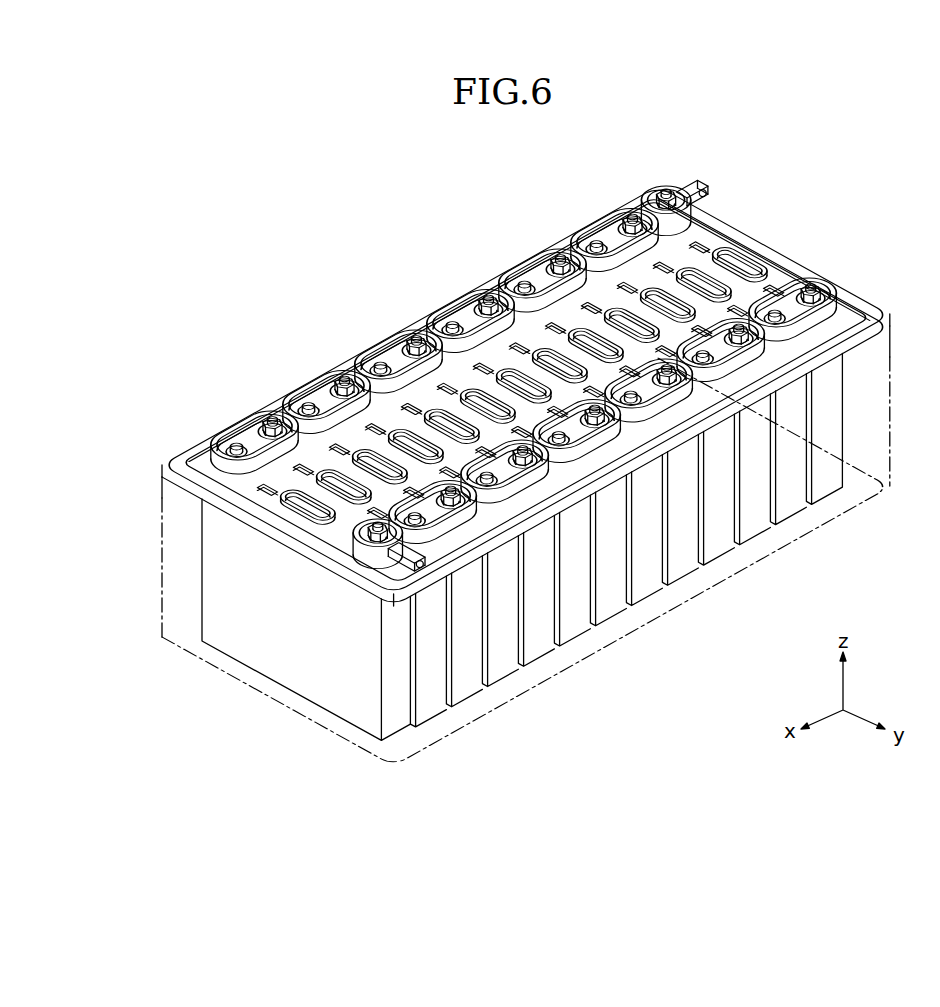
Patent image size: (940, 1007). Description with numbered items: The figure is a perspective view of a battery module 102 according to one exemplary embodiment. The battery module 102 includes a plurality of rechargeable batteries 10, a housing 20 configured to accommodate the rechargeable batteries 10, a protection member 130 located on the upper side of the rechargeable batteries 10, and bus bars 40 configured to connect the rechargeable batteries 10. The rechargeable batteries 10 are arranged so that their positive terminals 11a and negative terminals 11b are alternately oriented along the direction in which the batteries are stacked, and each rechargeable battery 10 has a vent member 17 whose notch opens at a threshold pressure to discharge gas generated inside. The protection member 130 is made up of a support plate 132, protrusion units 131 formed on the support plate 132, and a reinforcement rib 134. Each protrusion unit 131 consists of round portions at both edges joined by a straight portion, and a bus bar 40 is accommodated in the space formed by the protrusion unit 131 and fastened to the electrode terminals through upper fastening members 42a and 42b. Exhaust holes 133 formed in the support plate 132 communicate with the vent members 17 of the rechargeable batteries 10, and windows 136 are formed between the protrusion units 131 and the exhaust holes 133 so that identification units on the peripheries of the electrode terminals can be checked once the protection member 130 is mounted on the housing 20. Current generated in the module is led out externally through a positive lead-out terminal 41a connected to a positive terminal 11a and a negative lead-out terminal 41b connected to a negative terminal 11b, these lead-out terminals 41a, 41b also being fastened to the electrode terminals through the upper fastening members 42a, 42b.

The battery module 102 is at (422, 186).
The rechargeable battery 10 is at (571, 622).
The positive terminal 11a is at (667, 197).
The negative terminal 11b is at (267, 430).
The vent member 17 is at (265, 480).
The housing 20 is at (653, 617).
The bus bar 40 is at (250, 438).
The positive lead-out terminal 41a is at (705, 192).
The negative lead-out terminal 41b is at (422, 568).
The upper fastening member 42a is at (666, 190).
The upper fastening member 42b is at (290, 430).
The protection member 130 is at (418, 309).
The protrusion unit 131 is at (657, 203).
The support plate 132 is at (770, 246).
The exhaust hole 133 is at (306, 509).
The reinforcement rib 134 is at (205, 476).
The window 136 is at (232, 476).